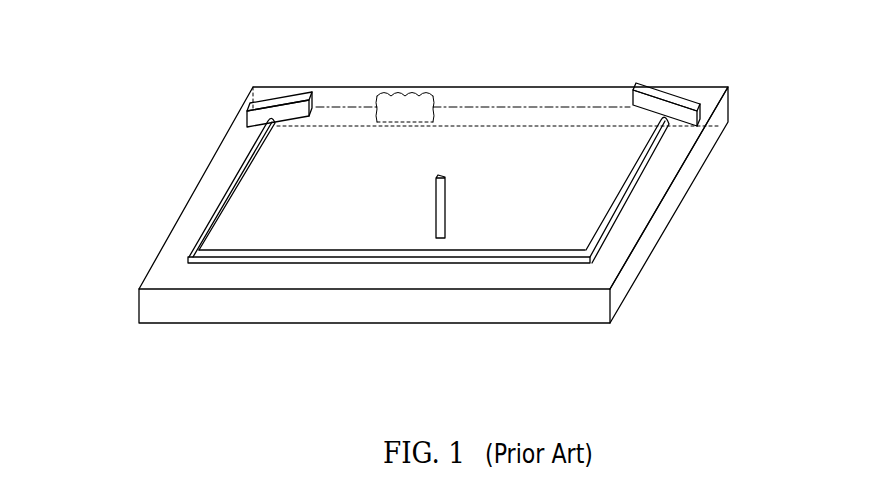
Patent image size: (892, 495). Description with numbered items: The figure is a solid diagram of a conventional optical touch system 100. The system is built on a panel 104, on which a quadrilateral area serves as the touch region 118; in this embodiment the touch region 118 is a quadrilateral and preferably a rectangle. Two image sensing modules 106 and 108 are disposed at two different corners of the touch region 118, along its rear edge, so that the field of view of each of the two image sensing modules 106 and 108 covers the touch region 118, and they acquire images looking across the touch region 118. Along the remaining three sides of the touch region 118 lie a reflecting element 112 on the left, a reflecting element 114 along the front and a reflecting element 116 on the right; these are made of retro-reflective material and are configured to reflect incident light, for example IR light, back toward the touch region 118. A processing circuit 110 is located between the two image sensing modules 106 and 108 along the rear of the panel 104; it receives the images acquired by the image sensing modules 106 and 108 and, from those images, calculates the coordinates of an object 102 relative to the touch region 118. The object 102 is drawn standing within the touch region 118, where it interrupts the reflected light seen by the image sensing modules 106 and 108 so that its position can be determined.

The optical touch system 100 is at (432, 206).
The object 102 is at (448, 212).
The panel 104 is at (642, 205).
The image sensing module 106 is at (276, 99).
The image sensing module 108 is at (678, 90).
The processing circuit 110 is at (410, 92).
The reflecting element 112 is at (235, 181).
The reflecting element 114 is at (325, 257).
The reflecting element 116 is at (657, 154).
The touch region 118 is at (540, 236).